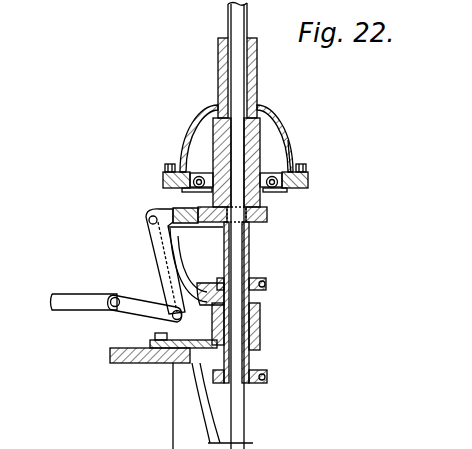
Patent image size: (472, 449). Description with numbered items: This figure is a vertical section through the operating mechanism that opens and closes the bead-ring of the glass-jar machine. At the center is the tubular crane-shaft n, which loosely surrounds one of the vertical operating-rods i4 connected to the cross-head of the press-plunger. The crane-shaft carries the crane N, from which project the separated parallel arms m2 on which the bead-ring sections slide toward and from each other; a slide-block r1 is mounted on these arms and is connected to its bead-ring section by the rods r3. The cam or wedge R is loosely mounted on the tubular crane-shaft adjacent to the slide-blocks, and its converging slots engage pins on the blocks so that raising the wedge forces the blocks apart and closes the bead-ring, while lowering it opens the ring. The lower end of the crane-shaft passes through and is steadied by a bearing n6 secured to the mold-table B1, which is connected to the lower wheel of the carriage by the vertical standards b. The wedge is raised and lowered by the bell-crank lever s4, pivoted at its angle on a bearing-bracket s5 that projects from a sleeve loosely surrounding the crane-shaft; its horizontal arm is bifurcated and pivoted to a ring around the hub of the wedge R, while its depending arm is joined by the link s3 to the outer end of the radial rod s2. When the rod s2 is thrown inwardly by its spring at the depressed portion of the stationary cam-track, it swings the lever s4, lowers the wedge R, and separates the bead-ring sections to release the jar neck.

The tubular crane-shaft n is at (249, 22).
The vertical operating-rod i4 is at (238, 75).
The cam or wedge R is at (272, 118).
The crane N is at (288, 128).
The parallel arms m2 is at (163, 182).
The rods r3 is at (271, 175).
The slide-block r1 is at (279, 192).
The bearing n6 is at (262, 323).
The bearing-bracket s5 is at (182, 277).
The bell-crank lever s4 is at (163, 259).
The link s3 is at (140, 312).
The rod s2 is at (68, 299).
The mold-table B1 is at (162, 359).
The vertical standards b is at (200, 406).